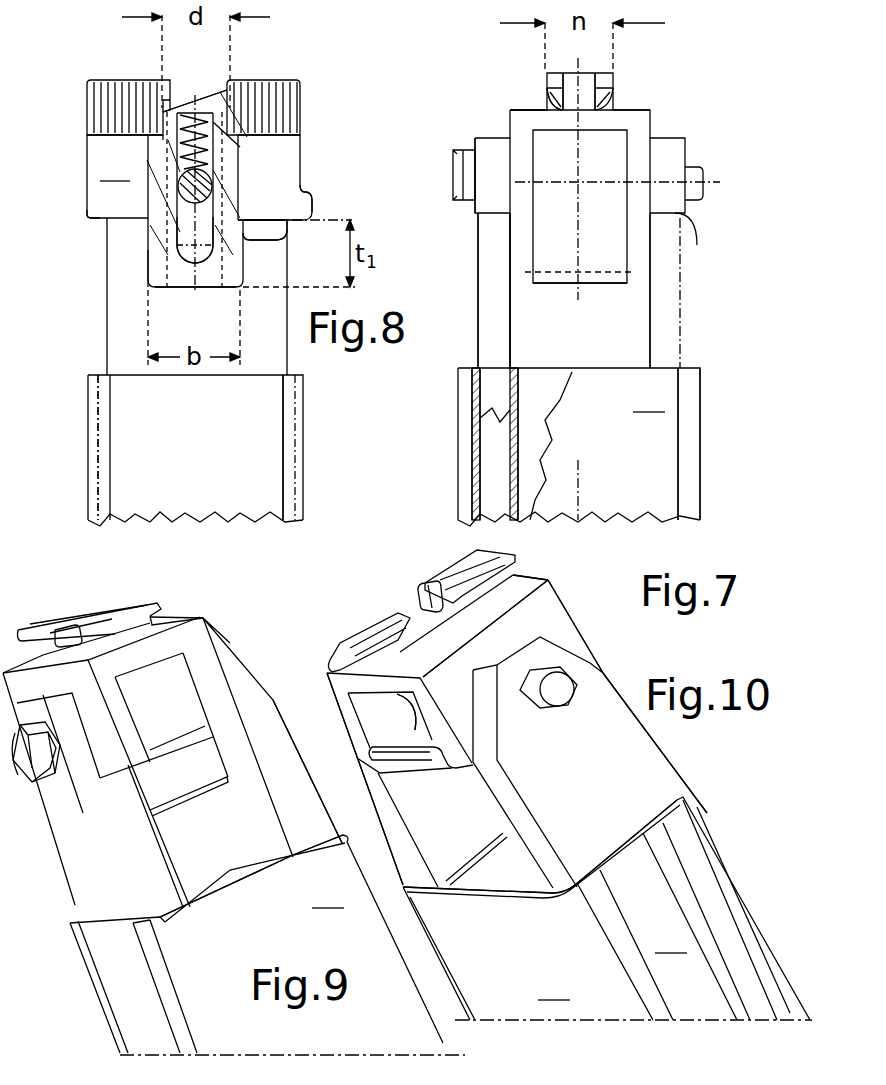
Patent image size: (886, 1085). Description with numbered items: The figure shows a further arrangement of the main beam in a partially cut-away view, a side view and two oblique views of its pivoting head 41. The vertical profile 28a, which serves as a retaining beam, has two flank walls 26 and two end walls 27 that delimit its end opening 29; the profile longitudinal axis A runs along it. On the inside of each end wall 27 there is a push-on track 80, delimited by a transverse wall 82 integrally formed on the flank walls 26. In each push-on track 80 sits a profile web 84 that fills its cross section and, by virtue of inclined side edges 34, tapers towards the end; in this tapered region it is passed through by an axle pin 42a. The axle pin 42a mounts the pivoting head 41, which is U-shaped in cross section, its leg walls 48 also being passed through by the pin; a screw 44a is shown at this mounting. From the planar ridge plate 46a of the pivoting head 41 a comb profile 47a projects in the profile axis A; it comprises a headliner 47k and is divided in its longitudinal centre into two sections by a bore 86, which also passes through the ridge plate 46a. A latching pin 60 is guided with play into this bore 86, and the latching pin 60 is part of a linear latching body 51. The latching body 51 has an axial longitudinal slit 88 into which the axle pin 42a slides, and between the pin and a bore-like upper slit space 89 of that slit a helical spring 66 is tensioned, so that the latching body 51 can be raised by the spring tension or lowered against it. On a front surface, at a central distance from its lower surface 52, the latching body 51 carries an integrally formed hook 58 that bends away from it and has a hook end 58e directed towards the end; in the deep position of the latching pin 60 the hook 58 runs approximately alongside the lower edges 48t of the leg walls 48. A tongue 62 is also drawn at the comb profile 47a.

In FIG. 8, the flank wall 26 is at (195, 450).
In FIG. 7, the flank wall 26 is at (579, 447).
In FIG. 9, the flank wall 26 is at (256, 944).
In FIG. 10, the flank wall 26 is at (606, 908).
In FIG. 8, the end wall 27 is at (130, 510).
In FIG. 7, the end wall 27 is at (472, 430).
In FIG. 10, the end wall 27 is at (663, 921).
In FIG. 8, the vertical profile 28a is at (250, 505).
In FIG. 7, the vertical profile 28a is at (712, 447).
In FIG. 9, the vertical profile 28a is at (90, 997).
In FIG. 10, the vertical profile 28a is at (725, 830).
In FIG. 7, the end opening 29 is at (543, 395).
In FIG. 7, the inclined side edge 34 is at (495, 215).
In FIG. 9, the inclined side edge 34 is at (250, 690).
In FIG. 10, the inclined side edge 34 is at (605, 672).
In FIG. 8, the pivoting head 41 is at (315, 118).
In FIG. 7, the pivoting head 41 is at (672, 113).
In FIG. 9, the pivoting head 41 is at (33, 600).
In FIG. 10, the pivoting head 41 is at (582, 590).
In FIG. 8, the axle pin 42a is at (230, 185).
In FIG. 7, the axle pin 42a is at (690, 170).
In FIG. 7, the fastening screw 44a is at (460, 200).
In FIG. 9, the fastening screw 44a is at (32, 785).
In FIG. 10, the fastening screw 44a is at (556, 712).
In FIG. 7, the ridge plate 46a is at (523, 114).
In FIG. 10, the ridge plate 46a is at (525, 583).
In FIG. 7, the comb profile 47a is at (585, 95).
In FIG. 9, the comb profile 47a is at (92, 608).
In FIG. 10, the comb profile 47a is at (465, 567).
In FIG. 7, the headliner 47k is at (614, 82).
In FIG. 9, the headliner 47k is at (160, 612).
In FIG. 10, the headliner 47k is at (352, 650).
In FIG. 8, the leg wall 48 is at (199, 183).
In FIG. 7, the leg wall 48 is at (643, 192).
In FIG. 9, the leg wall 48 is at (128, 732).
In FIG. 10, the leg wall 48 is at (570, 630).
In FIG. 8, the lower edge 48t is at (96, 223).
In FIG. 7, the lower edge 48t is at (690, 242).
In FIG. 8, the latching body 51 is at (135, 278).
In FIG. 7, the latching body 51 is at (608, 270).
In FIG. 9, the latching body 51 is at (215, 762).
In FIG. 10, the latching body 51 is at (475, 782).
In FIG. 8, the lower surface 52 is at (219, 297).
In FIG. 8, the hook 58 is at (292, 224).
In FIG. 8, the hook end 58e is at (306, 200).
In FIG. 10, the hook end 58e is at (421, 773).
In FIG. 8, the latching pin 60 is at (217, 105).
In FIG. 9, the latching pin 60 is at (83, 643).
In FIG. 8, the spring tongue 62 is at (178, 92).
In FIG. 7, the spring tongue 62 is at (548, 97).
In FIG. 9, the spring tongue 62 is at (68, 636).
In FIG. 10, the spring tongue 62 is at (430, 600).
In FIG. 8, the helical spring 66 is at (177, 135).
In FIG. 7, the push-on track 80 is at (493, 465).
In FIG. 7, the transverse wall 82 is at (520, 462).
In FIG. 9, the transverse wall 82 is at (253, 867).
In FIG. 10, the transverse wall 82 is at (500, 865).
In FIG. 8, the profile web 84 is at (197, 296).
In FIG. 7, the profile web 84 is at (492, 330).
In FIG. 9, the profile web 84 is at (275, 740).
In FIG. 10, the profile web 84 is at (380, 780).
In FIG. 8, the bore 86 is at (210, 83).
In FIG. 10, the bore 86 is at (457, 635).
In FIG. 8, the axial longitudinal slit 88 is at (183, 238).
In FIG. 8, the upper slit space 89 is at (205, 128).
In FIG. 7, the profile longitudinal axis A is at (582, 476).